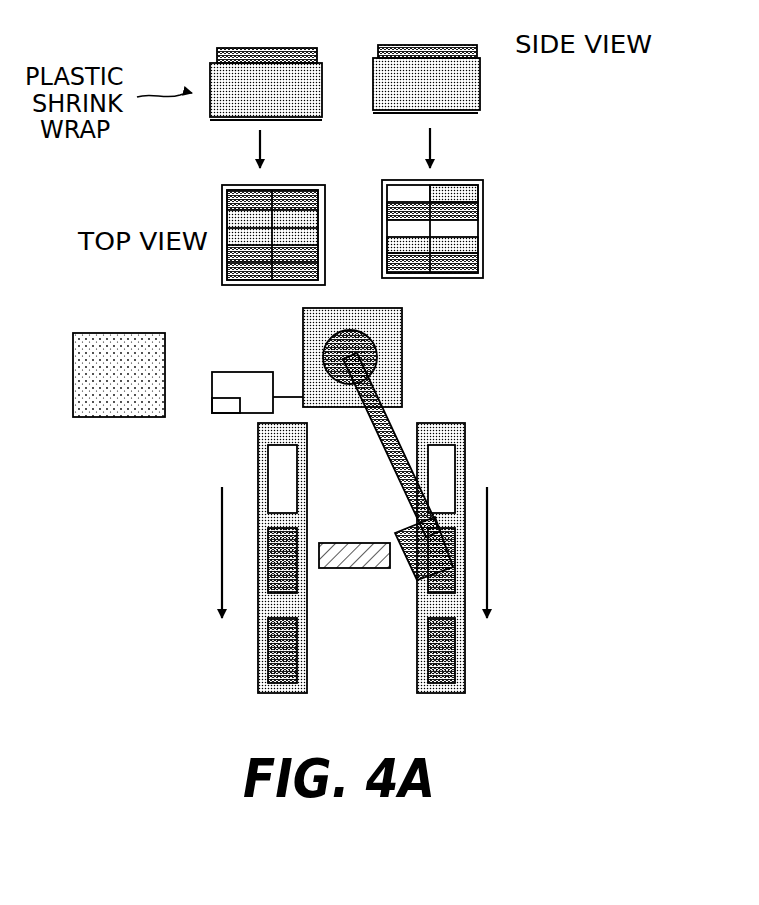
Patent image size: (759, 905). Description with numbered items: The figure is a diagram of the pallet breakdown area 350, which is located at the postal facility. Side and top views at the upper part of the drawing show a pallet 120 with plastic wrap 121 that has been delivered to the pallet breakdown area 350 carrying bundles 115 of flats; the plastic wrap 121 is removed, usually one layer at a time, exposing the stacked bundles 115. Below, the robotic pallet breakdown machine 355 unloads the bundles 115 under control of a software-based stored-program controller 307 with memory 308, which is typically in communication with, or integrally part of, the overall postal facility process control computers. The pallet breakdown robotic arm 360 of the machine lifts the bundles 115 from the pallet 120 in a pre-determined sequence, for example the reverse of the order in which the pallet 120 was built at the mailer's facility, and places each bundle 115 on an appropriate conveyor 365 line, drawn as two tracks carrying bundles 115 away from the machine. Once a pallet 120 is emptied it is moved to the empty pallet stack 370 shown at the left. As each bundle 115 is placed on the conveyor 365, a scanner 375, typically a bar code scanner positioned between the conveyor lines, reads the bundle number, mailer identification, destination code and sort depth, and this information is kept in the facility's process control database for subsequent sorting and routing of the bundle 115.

The bundles 115 is at (473, 193).
The pallet 120 is at (403, 113).
The plastic wrap 121 is at (482, 86).
The stored-program controller 307 is at (232, 372).
The memory 308 is at (218, 413).
The pallet breakdown area 350 is at (612, 249).
The robotic pallet breakdown machine 355 is at (430, 360).
The pallet breakdown robotic arm 360 is at (397, 497).
The conveyor 365 is at (418, 625).
The empty pallet stack 370 is at (120, 418).
The scanner 375 is at (342, 568).